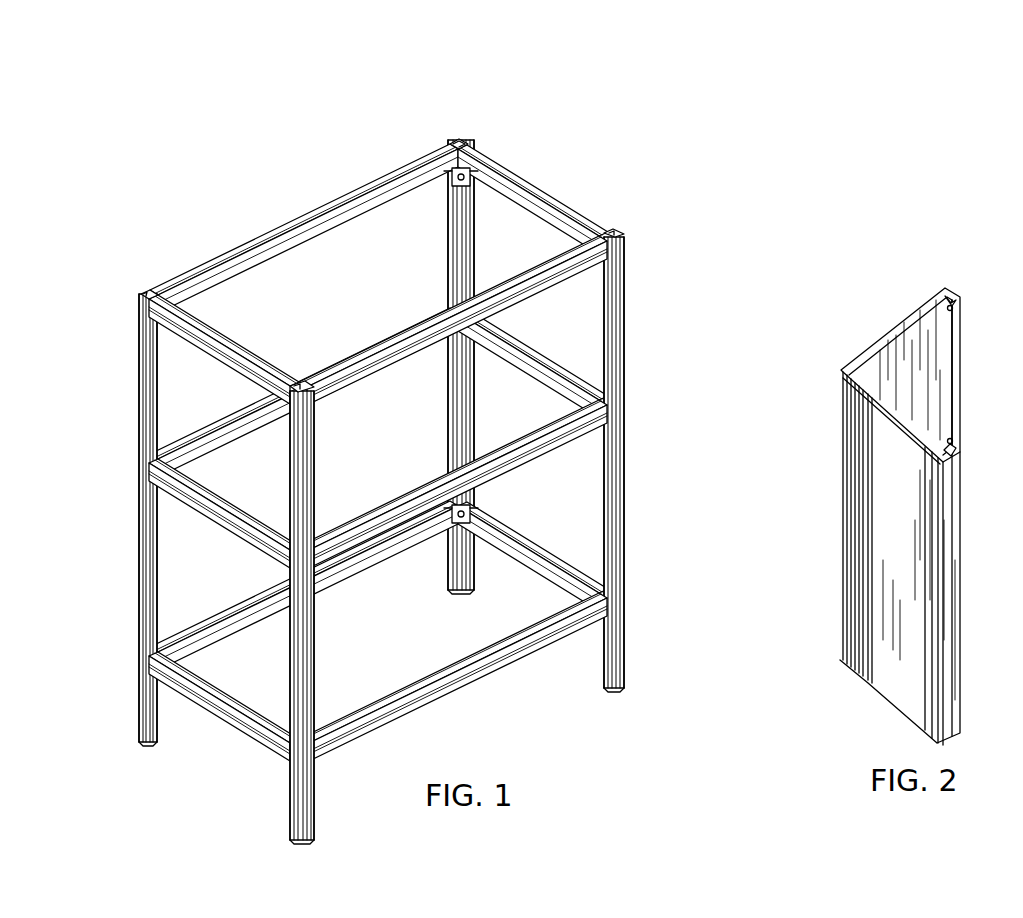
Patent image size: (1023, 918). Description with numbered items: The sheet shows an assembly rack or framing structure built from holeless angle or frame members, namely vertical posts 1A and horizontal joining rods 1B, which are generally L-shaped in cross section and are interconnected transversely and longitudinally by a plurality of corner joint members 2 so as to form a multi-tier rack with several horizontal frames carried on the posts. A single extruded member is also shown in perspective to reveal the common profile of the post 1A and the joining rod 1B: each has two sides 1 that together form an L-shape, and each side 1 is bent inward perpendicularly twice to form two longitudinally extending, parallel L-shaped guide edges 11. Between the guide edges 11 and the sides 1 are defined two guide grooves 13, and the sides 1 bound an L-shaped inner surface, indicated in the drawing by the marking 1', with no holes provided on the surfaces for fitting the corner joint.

In FIG. 1, the vertical post 1A is at (303, 482).
In FIG. 2, the vertical post 1A is at (833, 366).
In FIG. 1, the horizontal joining rod 1B is at (302, 224).
In FIG. 1, the corner joint member 2 is at (452, 180).
In FIG. 2, the side 1 is at (872, 516).
In FIG. 2, the inner surface of profile 1' is at (922, 282).
In FIG. 2, the L-shaped guide edge 11 is at (953, 292).
In FIG. 2, the guide groove 13 is at (950, 312).